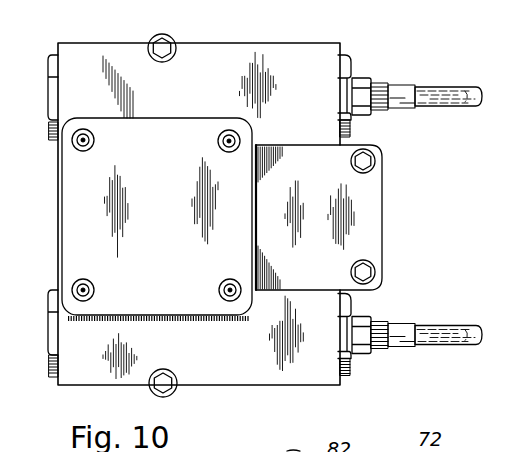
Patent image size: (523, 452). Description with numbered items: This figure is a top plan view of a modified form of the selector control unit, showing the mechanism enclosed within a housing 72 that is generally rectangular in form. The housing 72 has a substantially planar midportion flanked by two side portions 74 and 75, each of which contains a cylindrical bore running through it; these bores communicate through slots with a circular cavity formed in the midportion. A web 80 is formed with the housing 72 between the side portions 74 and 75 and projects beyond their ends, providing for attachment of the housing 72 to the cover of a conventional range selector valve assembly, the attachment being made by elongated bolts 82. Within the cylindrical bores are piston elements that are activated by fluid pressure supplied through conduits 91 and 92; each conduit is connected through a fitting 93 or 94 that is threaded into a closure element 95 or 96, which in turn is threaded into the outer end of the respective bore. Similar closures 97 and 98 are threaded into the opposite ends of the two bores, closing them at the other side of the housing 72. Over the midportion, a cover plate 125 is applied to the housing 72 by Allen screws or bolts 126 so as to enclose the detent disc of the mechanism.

The housing 72 is at (311, 42).
The side portion 74 is at (206, 52).
The side portion 75 is at (242, 372).
The web 80 is at (376, 222).
The elongated bolts 82 is at (149, 42).
The conduit 91 is at (460, 90).
The conduit 92 is at (458, 342).
The fitting 93 is at (370, 82).
The fitting 94 is at (378, 326).
The closure element 95 is at (350, 65).
The closure element 96 is at (350, 370).
The closure 97 is at (47, 72).
The closure 98 is at (48, 369).
The cover plate 125 is at (62, 208).
The Allen screws or bolts 126 is at (95, 141).